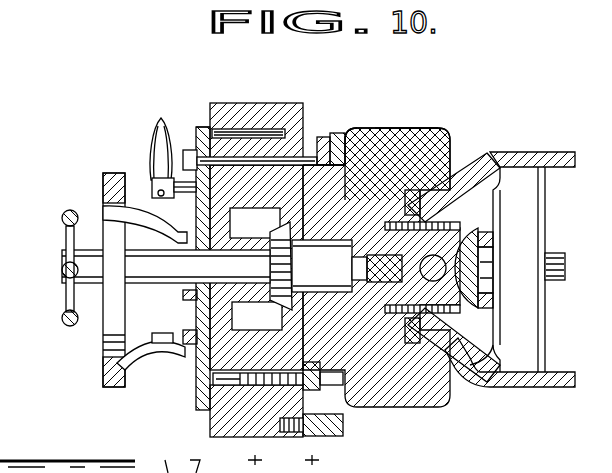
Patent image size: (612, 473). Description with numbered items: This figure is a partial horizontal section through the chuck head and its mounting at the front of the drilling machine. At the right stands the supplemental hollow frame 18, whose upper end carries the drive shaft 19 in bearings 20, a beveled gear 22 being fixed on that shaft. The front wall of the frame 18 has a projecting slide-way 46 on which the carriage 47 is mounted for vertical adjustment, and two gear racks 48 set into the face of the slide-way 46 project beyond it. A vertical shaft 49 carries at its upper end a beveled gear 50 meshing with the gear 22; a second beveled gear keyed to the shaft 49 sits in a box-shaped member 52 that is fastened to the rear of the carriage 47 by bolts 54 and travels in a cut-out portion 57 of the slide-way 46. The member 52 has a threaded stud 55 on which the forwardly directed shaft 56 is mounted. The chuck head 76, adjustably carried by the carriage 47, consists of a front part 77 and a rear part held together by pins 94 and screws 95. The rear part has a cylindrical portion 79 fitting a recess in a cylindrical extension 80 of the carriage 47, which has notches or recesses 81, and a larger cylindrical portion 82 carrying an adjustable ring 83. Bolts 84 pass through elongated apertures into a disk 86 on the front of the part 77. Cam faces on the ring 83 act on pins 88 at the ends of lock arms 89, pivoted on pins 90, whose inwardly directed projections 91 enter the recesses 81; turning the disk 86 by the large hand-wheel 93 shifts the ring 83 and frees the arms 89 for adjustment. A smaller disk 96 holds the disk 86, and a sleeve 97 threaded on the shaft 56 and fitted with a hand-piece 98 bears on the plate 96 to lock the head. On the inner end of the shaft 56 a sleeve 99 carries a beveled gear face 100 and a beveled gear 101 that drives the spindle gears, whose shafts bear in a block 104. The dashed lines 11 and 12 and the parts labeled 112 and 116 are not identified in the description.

The housing section 11 is at (255, 100).
The housing body 12 is at (312, 100).
The supplemental hollow frame 18 is at (560, 152).
The drive shaft 19 is at (566, 262).
The bearings 20 is at (533, 348).
The beveled gear 22 is at (505, 240).
The slide-way 46 is at (440, 165).
The carriage 47 is at (410, 128).
The gear racks 48 is at (445, 190).
The vertical shaft 49 is at (470, 258).
The beveled gear 50 is at (478, 268).
The box-shaped member 52 is at (494, 245).
The bolts 54 is at (470, 228).
The threaded stud 55 is at (478, 290).
The forwardly directed shaft 56 is at (277, 273).
The cut-out portion 57 is at (500, 205).
The chuck head 76 is at (216, 106).
The front part 77 is at (211, 427).
The cylindrical portion 79 is at (425, 132).
The cylindrical extension 80 is at (372, 390).
The notches or recesses 81 is at (385, 128).
The cylindrical portion 82 is at (322, 137).
The adjustable ring 83 is at (312, 390).
The bolts 84 is at (193, 150).
The disk 86 is at (200, 126).
The pins 88 is at (334, 133).
The lock arms 89 is at (348, 130).
The pins 90 is at (345, 432).
The inwardly directed projections 91 is at (360, 128).
The hand-wheel 93 is at (112, 175).
The pins 94 is at (268, 127).
The screws 95 is at (213, 379).
The smaller disk 96 is at (185, 296).
The sleeve 97 is at (66, 276).
The hand-piece 98 is at (68, 212).
The sleeve 99 is at (347, 266).
The beveled gear face 100 is at (480, 340).
The beveled gear 101 is at (276, 240).
The block 104 is at (257, 316).
The clamp 112 is at (153, 182).
The knob 116 is at (157, 130).